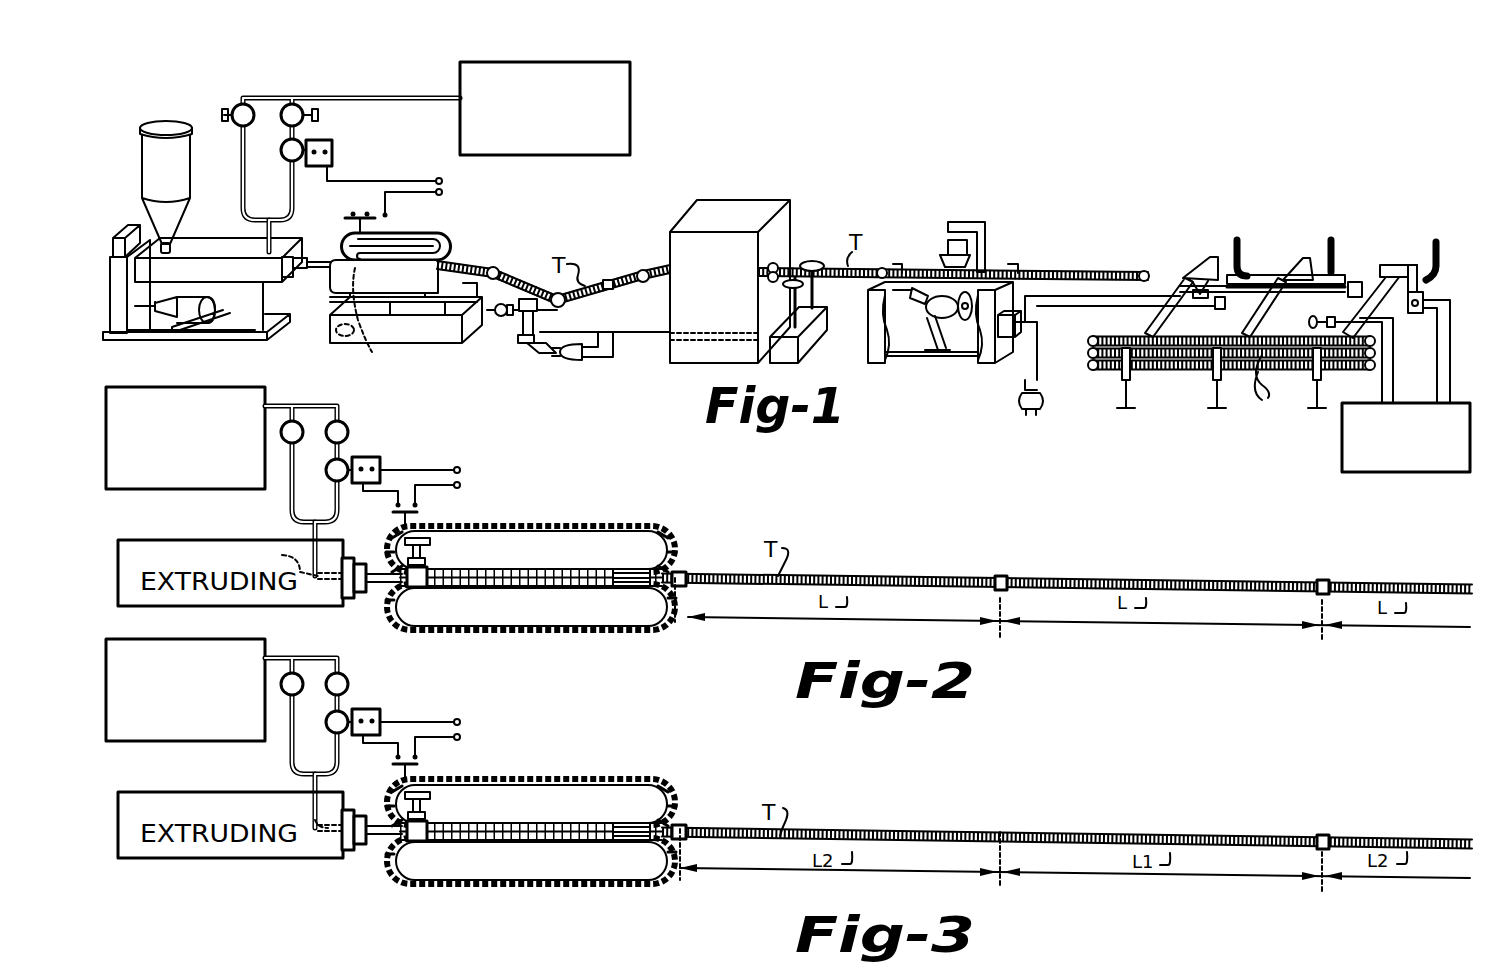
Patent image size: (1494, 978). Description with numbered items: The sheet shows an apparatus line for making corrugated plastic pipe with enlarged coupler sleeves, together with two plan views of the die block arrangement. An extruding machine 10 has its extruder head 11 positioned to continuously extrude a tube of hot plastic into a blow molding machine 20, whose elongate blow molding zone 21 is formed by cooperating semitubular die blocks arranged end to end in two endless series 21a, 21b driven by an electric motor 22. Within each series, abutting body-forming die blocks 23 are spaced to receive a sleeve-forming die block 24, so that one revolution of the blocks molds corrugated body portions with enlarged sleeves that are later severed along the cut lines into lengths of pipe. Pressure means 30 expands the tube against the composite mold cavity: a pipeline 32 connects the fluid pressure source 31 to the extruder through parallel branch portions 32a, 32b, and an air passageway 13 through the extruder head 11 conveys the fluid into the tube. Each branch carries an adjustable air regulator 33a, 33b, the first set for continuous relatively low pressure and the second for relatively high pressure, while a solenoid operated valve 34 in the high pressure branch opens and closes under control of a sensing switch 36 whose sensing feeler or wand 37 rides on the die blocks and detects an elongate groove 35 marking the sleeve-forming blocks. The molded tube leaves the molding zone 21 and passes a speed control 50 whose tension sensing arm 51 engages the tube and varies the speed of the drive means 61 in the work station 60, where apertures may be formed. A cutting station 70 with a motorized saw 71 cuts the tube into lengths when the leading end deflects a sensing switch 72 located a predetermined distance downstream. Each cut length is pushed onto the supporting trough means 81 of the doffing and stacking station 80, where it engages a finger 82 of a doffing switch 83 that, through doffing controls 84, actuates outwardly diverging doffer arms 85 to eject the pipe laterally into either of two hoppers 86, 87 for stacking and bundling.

In FIG. 1, the extruding machine 10 is at (118, 226).
In FIG. 1, the extruder head 11 is at (327, 258).
In FIG. 2, the extruder head 11 is at (340, 594).
In FIG. 3, the extruder head 11 is at (355, 851).
In FIG. 2, the air passageway 13 is at (310, 561).
In FIG. 3, the air passageway 13 is at (331, 841).
In FIG. 1, the blow molding machine 20 is at (416, 282).
In FIG. 2, the blow molding machine 20 is at (534, 558).
In FIG. 3, the blow molding machine 20 is at (535, 812).
In FIG. 1, the blow molding zone 21 is at (416, 273).
In FIG. 2, the blow molding zone 21 is at (531, 575).
In FIG. 3, the blow molding zone 21 is at (531, 831).
In FIG. 1, the endless series of die blocks 21a is at (447, 238).
In FIG. 2, the endless series of die blocks 21a is at (557, 525).
In FIG. 1, the endless series of die blocks 21b is at (402, 283).
In FIG. 2, the endless series of die blocks 21b is at (519, 634).
In FIG. 1, the electric motor 22 is at (370, 320).
In FIG. 2, the electric motor 22 is at (431, 547).
In FIG. 3, the electric motor 22 is at (430, 816).
In FIG. 2, the body-forming die blocks 23 is at (673, 537).
In FIG. 3, the body-forming die blocks 23 is at (533, 832).
In FIG. 2, the sleeve-forming die block 24 is at (673, 556).
In FIG. 3, the sleeve-forming die block 24 is at (555, 813).
In FIG. 1, the pressure means 30 is at (311, 155).
In FIG. 1, the fluid pressure source 31 is at (630, 90).
In FIG. 2, the fluid pressure source 31 is at (192, 387).
In FIG. 3, the fluid pressure source 31 is at (185, 676).
In FIG. 1, the pipeline 32 is at (420, 96).
In FIG. 2, the pipeline 32 is at (270, 405).
In FIG. 3, the pipeline 32 is at (285, 644).
In FIG. 1, the branch portion 32a is at (242, 172).
In FIG. 2, the branch portion 32a is at (292, 492).
In FIG. 3, the branch portion 32a is at (267, 734).
In FIG. 1, the branch portion 32b is at (292, 188).
In FIG. 2, the branch portion 32b is at (338, 500).
In FIG. 3, the branch portion 32b is at (320, 780).
In FIG. 1, the adjustable air regulator 33a is at (232, 108).
In FIG. 2, the adjustable air regulator 33a is at (296, 420).
In FIG. 3, the adjustable air regulator 33a is at (304, 660).
In FIG. 1, the adjustable air regulator 33b is at (306, 116).
In FIG. 2, the adjustable air regulator 33b is at (346, 424).
In FIG. 3, the adjustable air regulator 33b is at (360, 674).
In FIG. 1, the solenoid operated valve 34 is at (282, 152).
In FIG. 2, the solenoid operated valve 34 is at (326, 473).
In FIG. 3, the solenoid operated valve 34 is at (325, 716).
In FIG. 2, the elongate groove 35 is at (428, 524).
In FIG. 3, the elongate groove 35 is at (628, 817).
In FIG. 1, the sensing switch 36 is at (367, 212).
In FIG. 2, the sensing switch 36 is at (399, 504).
In FIG. 3, the sensing switch 36 is at (406, 726).
In FIG. 1, the sensing feeler or wand 37 is at (353, 212).
In FIG. 2, the sensing feeler or wand 37 is at (397, 512).
In FIG. 3, the sensing feeler or wand 37 is at (433, 762).
In FIG. 1, the speed control 50 is at (569, 345).
In FIG. 1, the tension sensing arm 51 is at (556, 312).
In FIG. 1, the work station 60 is at (909, 261).
In FIG. 1, the drive means 61 is at (812, 340).
In FIG. 1, the cutting station 70 is at (1046, 296).
In FIG. 1, the motorized saw 71 is at (963, 355).
In FIG. 1, the sensing switch 72 is at (1222, 268).
In FIG. 1, the doffing and stacking station 80 is at (1279, 344).
In FIG. 1, the supporting trough means 81 is at (1348, 276).
In FIG. 1, the finger 82 is at (1408, 300).
In FIG. 1, the doffing switch 83 is at (1414, 314).
In FIG. 1, the doffing controls 84 is at (1417, 474).
In FIG. 1, the doffer arms 85 is at (1374, 282).
In FIG. 1, the hopper 86 is at (1152, 374).
In FIG. 1, the hopper 87 is at (1325, 262).